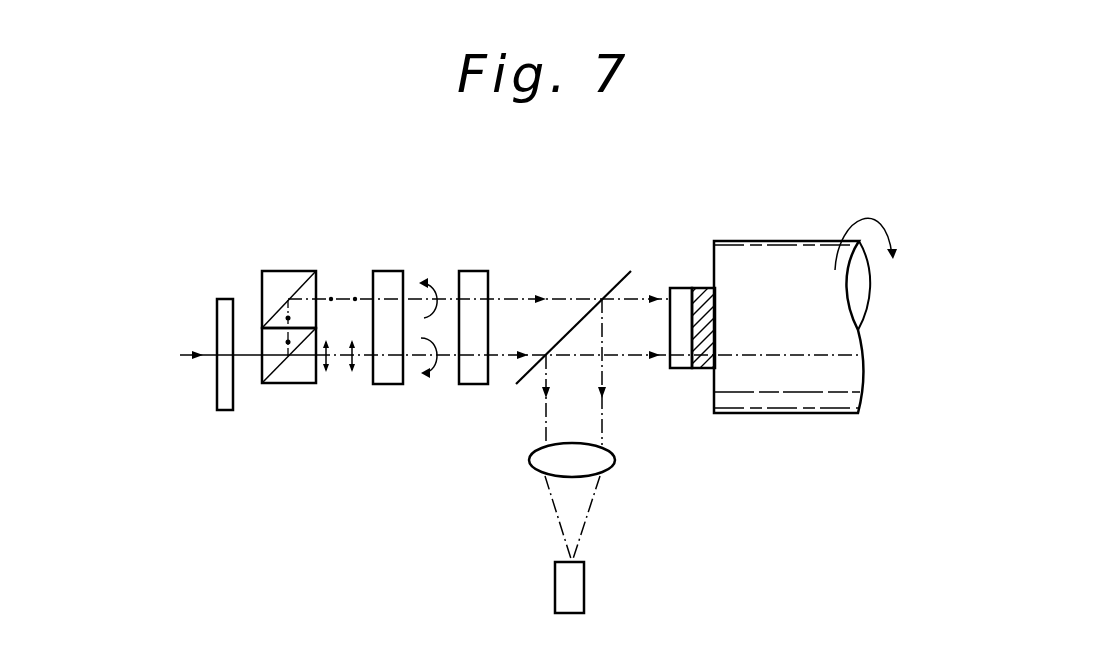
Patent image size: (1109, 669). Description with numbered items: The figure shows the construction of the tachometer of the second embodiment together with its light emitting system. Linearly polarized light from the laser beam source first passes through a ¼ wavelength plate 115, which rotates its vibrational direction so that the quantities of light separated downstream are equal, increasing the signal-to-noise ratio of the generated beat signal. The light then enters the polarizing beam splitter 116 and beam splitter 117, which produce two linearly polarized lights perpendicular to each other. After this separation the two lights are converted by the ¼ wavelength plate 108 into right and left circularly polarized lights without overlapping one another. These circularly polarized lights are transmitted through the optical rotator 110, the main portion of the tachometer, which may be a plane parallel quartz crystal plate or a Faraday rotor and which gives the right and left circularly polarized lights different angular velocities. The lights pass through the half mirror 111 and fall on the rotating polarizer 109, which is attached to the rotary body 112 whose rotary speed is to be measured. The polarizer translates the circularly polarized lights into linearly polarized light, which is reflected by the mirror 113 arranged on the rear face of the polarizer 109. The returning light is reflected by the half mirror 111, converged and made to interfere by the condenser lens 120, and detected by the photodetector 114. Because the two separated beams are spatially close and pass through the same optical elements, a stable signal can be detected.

The ¼ wavelength plate 108 is at (385, 386).
The polarizer 109 is at (678, 292).
The optical rotator 110 is at (470, 385).
The half mirror 111 is at (617, 282).
The rotary body 112 is at (777, 250).
The mirror 113 is at (700, 298).
The photodetector 114 is at (573, 592).
The ¼ wavelength plate 115 is at (217, 303).
The polarizing beam splitter 116 is at (286, 385).
The beam splitter 117 is at (283, 276).
The condenser lens 120 is at (605, 458).